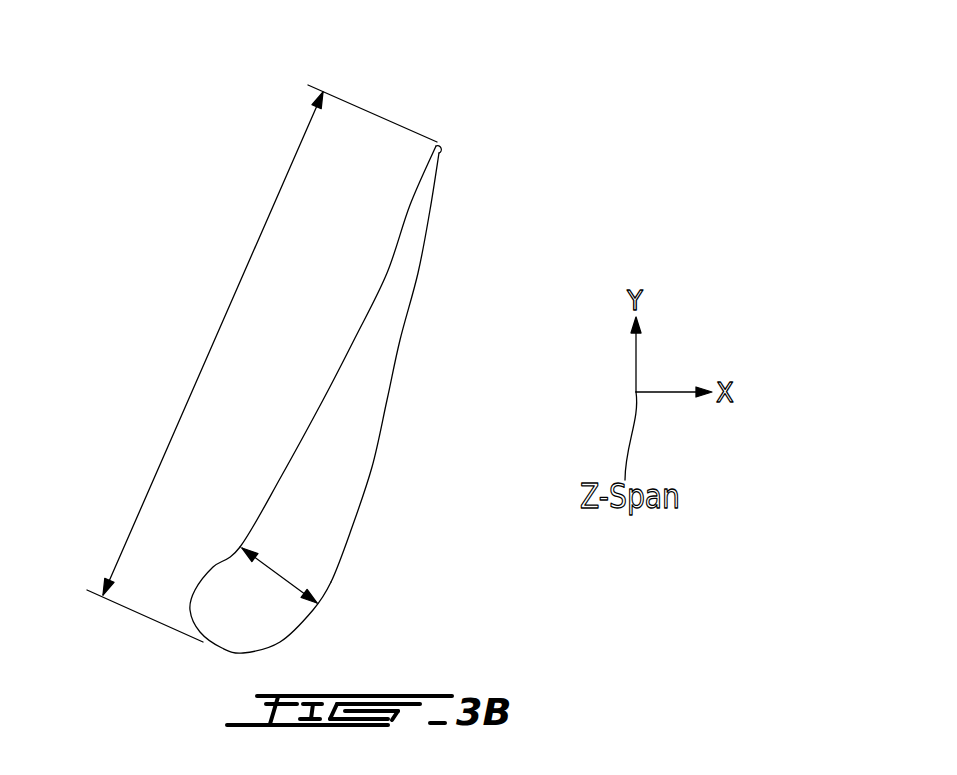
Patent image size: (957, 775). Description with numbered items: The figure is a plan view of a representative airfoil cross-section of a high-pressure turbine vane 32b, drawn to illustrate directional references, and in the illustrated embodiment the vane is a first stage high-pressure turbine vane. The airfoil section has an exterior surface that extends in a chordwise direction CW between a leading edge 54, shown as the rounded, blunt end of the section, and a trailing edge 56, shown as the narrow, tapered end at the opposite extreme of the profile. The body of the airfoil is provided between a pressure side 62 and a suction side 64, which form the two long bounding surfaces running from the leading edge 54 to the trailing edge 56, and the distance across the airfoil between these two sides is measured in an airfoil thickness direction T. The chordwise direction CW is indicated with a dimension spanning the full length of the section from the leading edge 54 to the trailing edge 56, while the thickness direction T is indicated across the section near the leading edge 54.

The HP turbine vane 32b is at (299, 402).
The leading edge 54 is at (217, 648).
The trailing edge 56 is at (440, 142).
The pressure side 62 is at (305, 413).
The suction side 64 is at (385, 440).
The chordwise direction CW is at (213, 343).
The airfoil thickness direction T is at (280, 572).